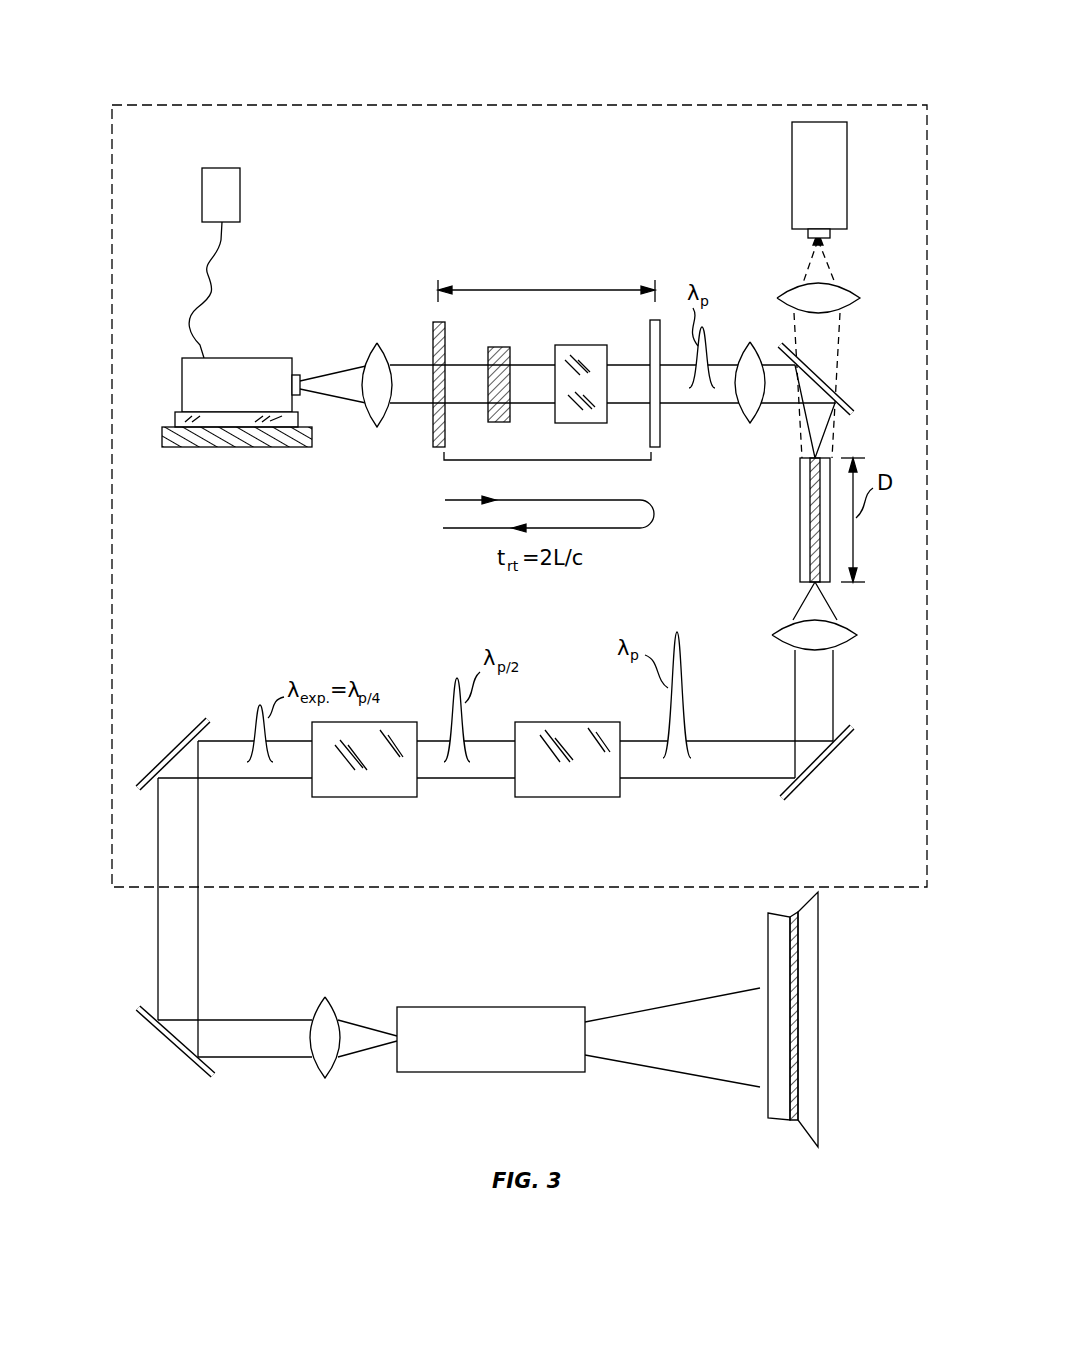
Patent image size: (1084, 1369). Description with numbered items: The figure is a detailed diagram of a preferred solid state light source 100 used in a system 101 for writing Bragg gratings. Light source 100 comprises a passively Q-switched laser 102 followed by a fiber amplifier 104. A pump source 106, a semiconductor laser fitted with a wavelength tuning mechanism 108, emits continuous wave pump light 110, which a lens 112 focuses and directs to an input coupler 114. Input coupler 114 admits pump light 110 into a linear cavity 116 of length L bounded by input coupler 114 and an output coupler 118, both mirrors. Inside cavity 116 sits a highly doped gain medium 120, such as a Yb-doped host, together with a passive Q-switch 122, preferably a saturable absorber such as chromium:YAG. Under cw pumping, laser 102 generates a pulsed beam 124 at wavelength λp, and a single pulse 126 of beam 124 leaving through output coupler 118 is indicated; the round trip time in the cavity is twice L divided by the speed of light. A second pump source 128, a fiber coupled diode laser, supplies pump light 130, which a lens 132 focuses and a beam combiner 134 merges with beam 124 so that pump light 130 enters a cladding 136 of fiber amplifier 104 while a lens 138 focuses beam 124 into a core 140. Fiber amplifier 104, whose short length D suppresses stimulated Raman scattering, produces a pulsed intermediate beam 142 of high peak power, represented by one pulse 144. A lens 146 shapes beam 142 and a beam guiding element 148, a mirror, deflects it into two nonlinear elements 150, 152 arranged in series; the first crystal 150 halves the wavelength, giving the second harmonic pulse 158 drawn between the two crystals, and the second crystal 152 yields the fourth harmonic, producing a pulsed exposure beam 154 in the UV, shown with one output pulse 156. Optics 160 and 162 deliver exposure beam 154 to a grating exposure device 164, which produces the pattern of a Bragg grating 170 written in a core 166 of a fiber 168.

The solid state light source 100 is at (262, 105).
The system 101 is at (663, 50).
The passively Q-switched laser 102 is at (484, 244).
The fiber amplifier 104 is at (725, 540).
The pump source 106 is at (240, 358).
The wavelength tuning mechanism 108 is at (240, 197).
The pump light 110 is at (345, 374).
The lens 112 is at (385, 425).
The input coupler 114 is at (433, 330).
The cavity 116 is at (547, 460).
The output coupler 118 is at (662, 440).
The gain medium 120 is at (575, 345).
The passive Q-switch 122 is at (497, 347).
The pulsed beam 124 is at (693, 405).
The pulse 126 is at (713, 355).
The pump source 128 is at (792, 168).
The pump light 130 is at (805, 270).
The lens 132 is at (880, 290).
The beam combiner 134 is at (853, 413).
The cladding 136 is at (800, 548).
The lens 138 is at (752, 423).
The core 140 is at (780, 520).
The pulsed intermediate beam 142 is at (793, 700).
The pulse 144 is at (685, 716).
The lens 146 is at (775, 632).
The beam guiding element 148 is at (822, 772).
The nonlinear element 150 is at (562, 722).
The nonlinear element 152 is at (357, 797).
The pulsed exposure beam 154 is at (285, 780).
The output pulse 156 is at (250, 715).
The second harmonic pulse 158 is at (450, 712).
The optics 160 is at (190, 732).
The optics 162 is at (336, 1000).
The grating exposure device 164 is at (512, 1053).
The core 166 is at (800, 950).
The fiber 168 is at (768, 942).
The Bragg grating 170 is at (802, 1019).